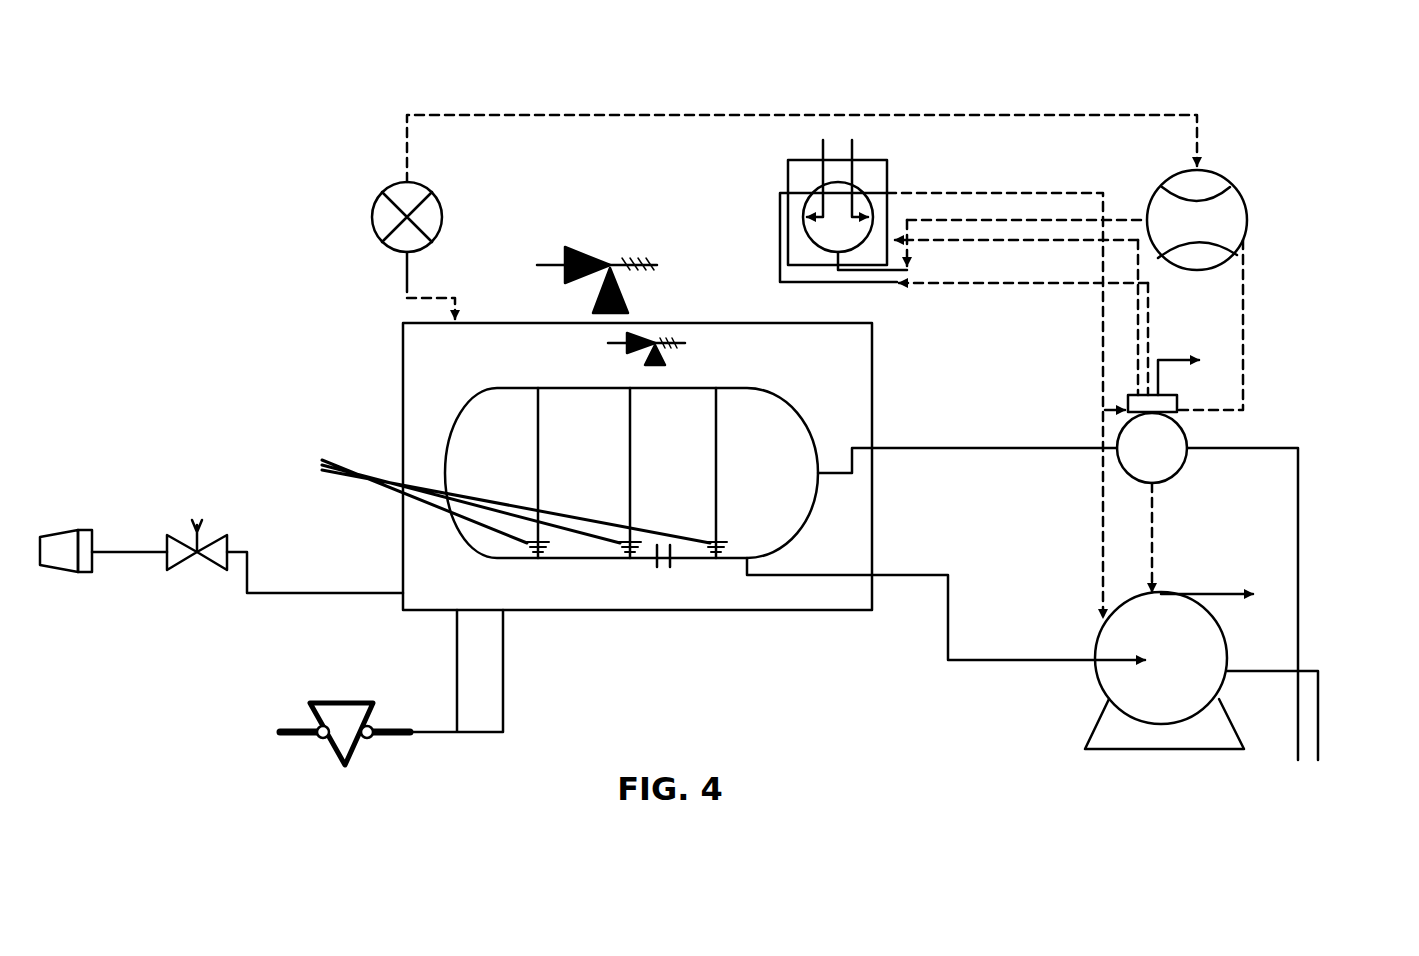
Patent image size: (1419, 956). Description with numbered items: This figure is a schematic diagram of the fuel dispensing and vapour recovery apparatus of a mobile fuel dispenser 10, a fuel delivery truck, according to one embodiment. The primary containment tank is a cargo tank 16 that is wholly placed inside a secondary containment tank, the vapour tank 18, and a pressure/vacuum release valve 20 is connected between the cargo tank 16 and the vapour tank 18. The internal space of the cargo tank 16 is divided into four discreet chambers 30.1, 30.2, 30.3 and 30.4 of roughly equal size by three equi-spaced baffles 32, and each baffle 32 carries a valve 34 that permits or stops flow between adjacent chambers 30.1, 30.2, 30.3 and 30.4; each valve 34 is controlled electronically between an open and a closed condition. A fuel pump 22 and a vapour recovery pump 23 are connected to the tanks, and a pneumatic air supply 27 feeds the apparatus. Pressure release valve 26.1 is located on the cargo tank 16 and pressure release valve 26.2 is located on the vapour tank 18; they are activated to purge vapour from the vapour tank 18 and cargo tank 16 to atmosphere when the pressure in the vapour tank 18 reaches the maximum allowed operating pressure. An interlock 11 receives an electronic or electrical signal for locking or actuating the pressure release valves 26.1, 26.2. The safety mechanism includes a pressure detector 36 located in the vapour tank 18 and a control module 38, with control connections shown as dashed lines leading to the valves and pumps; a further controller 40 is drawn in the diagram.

The mobile fuel dispenser 10 is at (236, 224).
The interlock 11 is at (364, 753).
The cargo tank 16 is at (570, 560).
The vapour tank 18 is at (620, 598).
The pressure/vacuum release valve 20 is at (657, 566).
The fuel pump 22 is at (1081, 688).
The vapour recovery pump 23 is at (1201, 432).
The pressure release valve 26.1 is at (659, 332).
The pressure release valve 26.2 is at (609, 239).
The pneumatic air supply 27 is at (76, 513).
The chamber 30.1 is at (473, 453).
The chamber 30.2 is at (557, 453).
The chamber 30.3 is at (652, 453).
The chamber 30.4 is at (742, 453).
The baffle 32 is at (630, 415).
The valve 34 is at (504, 500).
The pressure detector 36 is at (375, 200).
The control module 38 is at (899, 151).
The controller 40 is at (1250, 188).